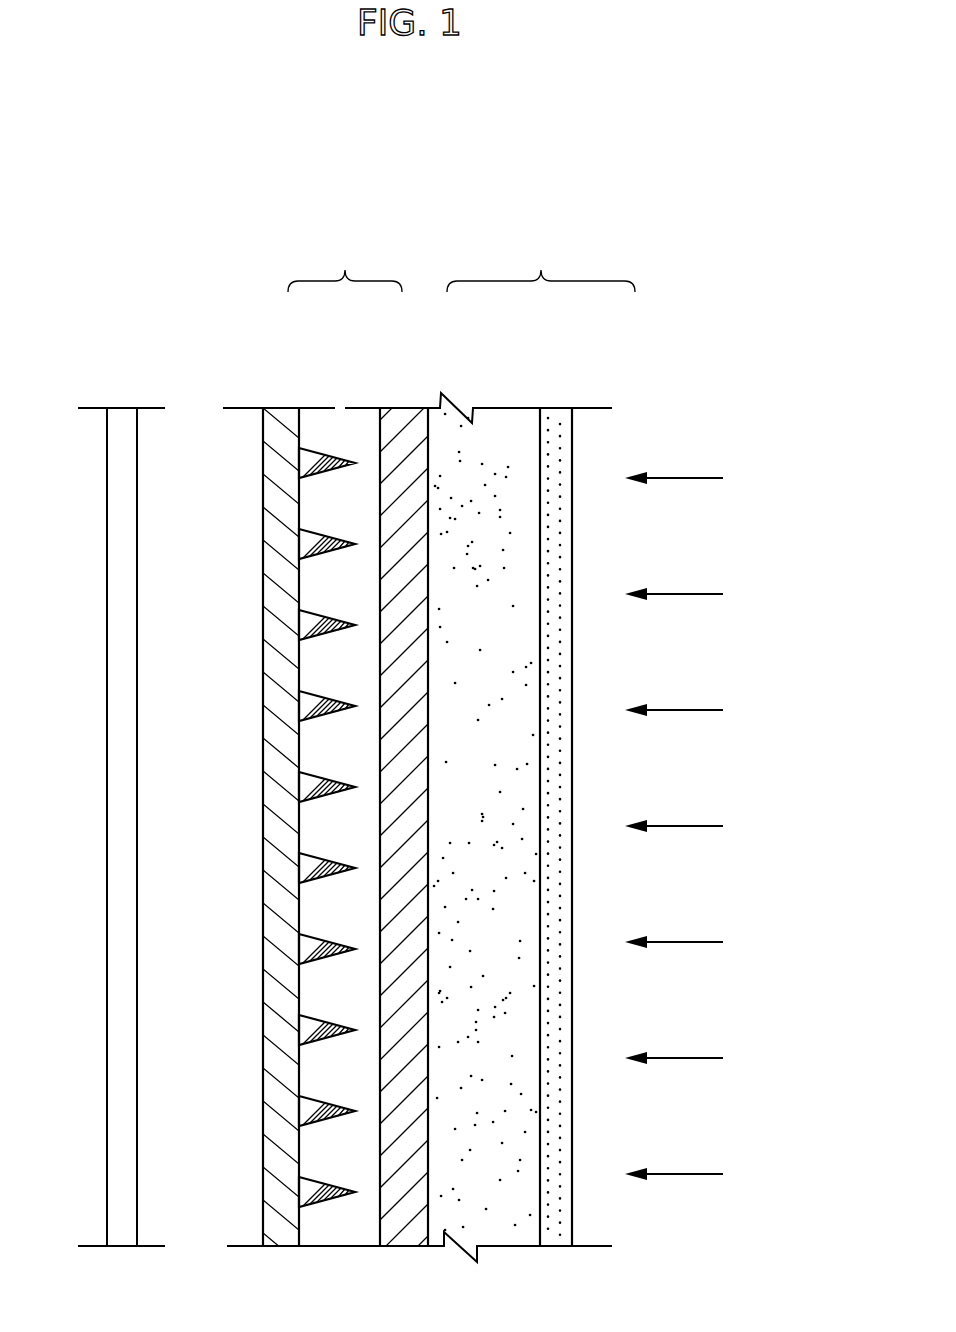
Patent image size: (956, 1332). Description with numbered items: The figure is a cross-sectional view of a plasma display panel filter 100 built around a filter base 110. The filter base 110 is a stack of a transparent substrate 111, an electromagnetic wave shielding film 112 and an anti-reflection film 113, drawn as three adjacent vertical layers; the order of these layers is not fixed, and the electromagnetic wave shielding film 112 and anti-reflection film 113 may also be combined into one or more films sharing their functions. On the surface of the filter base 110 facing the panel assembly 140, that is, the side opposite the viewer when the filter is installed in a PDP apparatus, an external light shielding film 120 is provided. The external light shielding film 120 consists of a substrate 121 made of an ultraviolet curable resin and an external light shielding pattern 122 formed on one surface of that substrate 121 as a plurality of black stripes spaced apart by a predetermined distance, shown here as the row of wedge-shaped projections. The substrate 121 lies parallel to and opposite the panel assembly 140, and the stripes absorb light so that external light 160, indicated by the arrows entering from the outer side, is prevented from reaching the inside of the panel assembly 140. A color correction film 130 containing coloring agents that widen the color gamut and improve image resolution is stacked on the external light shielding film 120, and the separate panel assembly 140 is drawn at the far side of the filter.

The PDP filter 100 is at (618, 385).
The filter base 110 is at (541, 262).
The transparent substrate 111 is at (510, 423).
The electromagnetic wave shielding film 112 is at (403, 415).
The anti-reflection film 113 is at (557, 417).
The external light shielding film 120 is at (345, 262).
The substrate 121 is at (359, 423).
The external light shielding pattern 122 is at (327, 452).
The color correction film 130 is at (278, 420).
The panel assembly 140 is at (120, 422).
The external light 160 is at (685, 477).